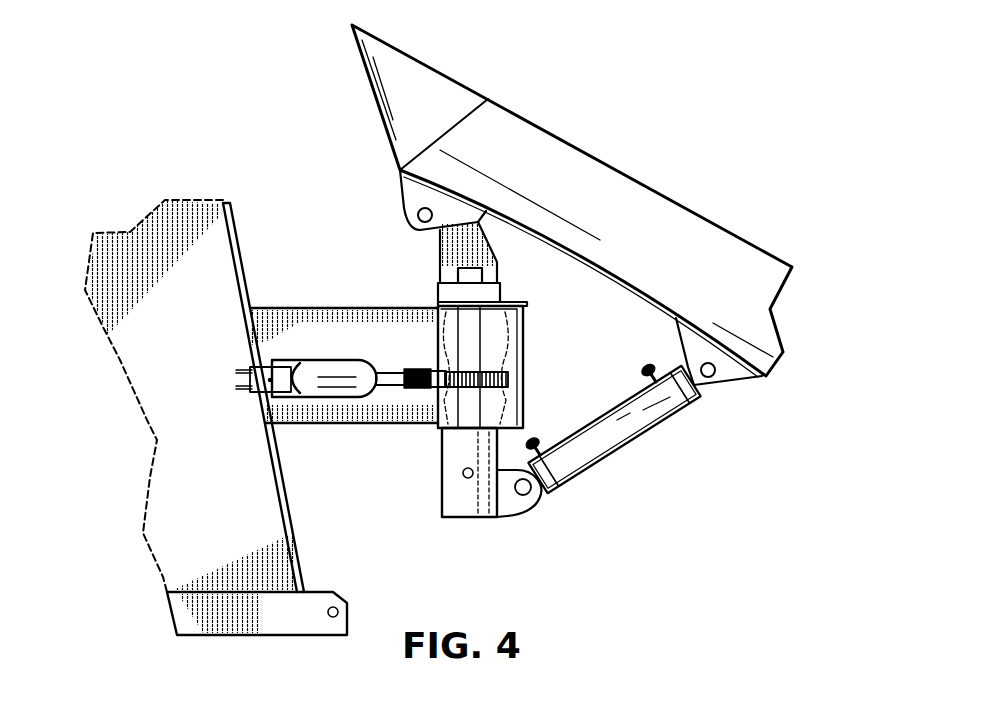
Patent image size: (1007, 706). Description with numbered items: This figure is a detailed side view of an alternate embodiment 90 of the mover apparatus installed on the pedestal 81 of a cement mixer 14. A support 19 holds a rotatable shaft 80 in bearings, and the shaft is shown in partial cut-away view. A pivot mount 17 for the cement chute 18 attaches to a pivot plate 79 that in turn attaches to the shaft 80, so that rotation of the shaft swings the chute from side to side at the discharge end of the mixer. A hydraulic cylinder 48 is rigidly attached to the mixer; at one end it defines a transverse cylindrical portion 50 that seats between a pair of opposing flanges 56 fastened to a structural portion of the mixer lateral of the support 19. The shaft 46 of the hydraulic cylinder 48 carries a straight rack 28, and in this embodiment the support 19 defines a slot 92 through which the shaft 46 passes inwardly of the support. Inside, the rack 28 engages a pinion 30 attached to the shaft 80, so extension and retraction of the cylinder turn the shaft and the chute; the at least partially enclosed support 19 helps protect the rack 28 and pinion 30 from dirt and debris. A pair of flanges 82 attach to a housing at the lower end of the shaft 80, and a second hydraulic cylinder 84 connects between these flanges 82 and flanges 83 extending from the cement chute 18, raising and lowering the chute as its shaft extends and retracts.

The cement mixer truck 14 is at (265, 617).
The pivot mount 17 is at (488, 250).
The cement chute 18 is at (683, 217).
The support 19 is at (392, 340).
The rack 28 is at (440, 430).
The pinion 30 is at (503, 385).
The shaft 46 is at (387, 370).
The hydraulic cylinder 48 is at (328, 378).
The transverse cylindrical portion 50 is at (235, 373).
The flanges 56 is at (252, 343).
The pivot plate 79 is at (505, 300).
The rotatable shaft 80 is at (475, 350).
The pedestal 81 is at (153, 470).
The flanges 82 is at (517, 497).
The flanges 83 is at (745, 373).
The hydraulic cylinder 84 is at (615, 445).
The alternate embodiment of the mover apparatus 90 is at (315, 214).
The slot 92 is at (427, 366).